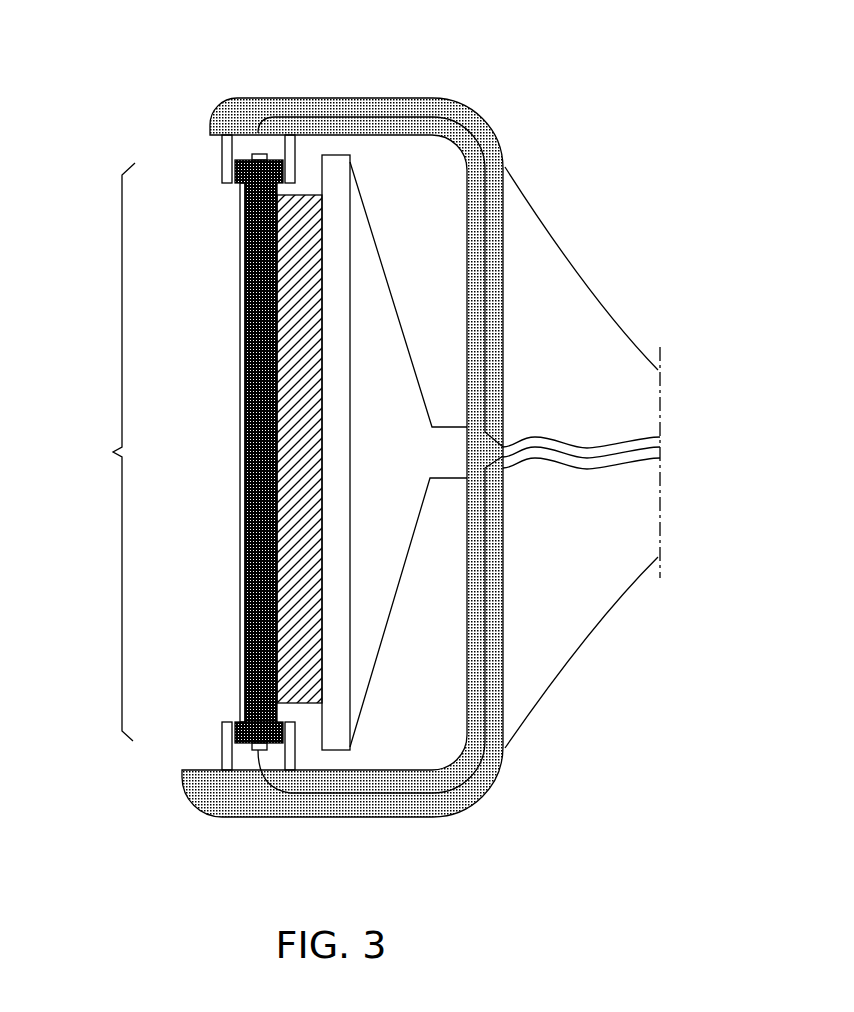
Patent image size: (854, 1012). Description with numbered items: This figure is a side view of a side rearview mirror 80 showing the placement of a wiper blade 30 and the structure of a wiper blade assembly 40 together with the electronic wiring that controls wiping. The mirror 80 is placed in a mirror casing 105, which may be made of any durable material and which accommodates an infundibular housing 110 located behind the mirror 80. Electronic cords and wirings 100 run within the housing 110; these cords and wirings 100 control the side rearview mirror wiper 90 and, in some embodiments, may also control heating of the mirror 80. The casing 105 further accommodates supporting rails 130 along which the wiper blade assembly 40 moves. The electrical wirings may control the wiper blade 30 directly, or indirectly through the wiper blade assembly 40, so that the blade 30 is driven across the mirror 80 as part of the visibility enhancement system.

The mirror casing 105 is at (228, 97).
The electronic cords and wirings 100 is at (547, 447).
The wiper blade assembly 40 is at (223, 153).
The supporting rails 130 is at (239, 183).
The wiper blade 30 is at (248, 625).
The housing 110 is at (363, 625).
The side rearview mirror 80 is at (337, 722).
The side rearview mirror wiper 90 is at (107, 452).